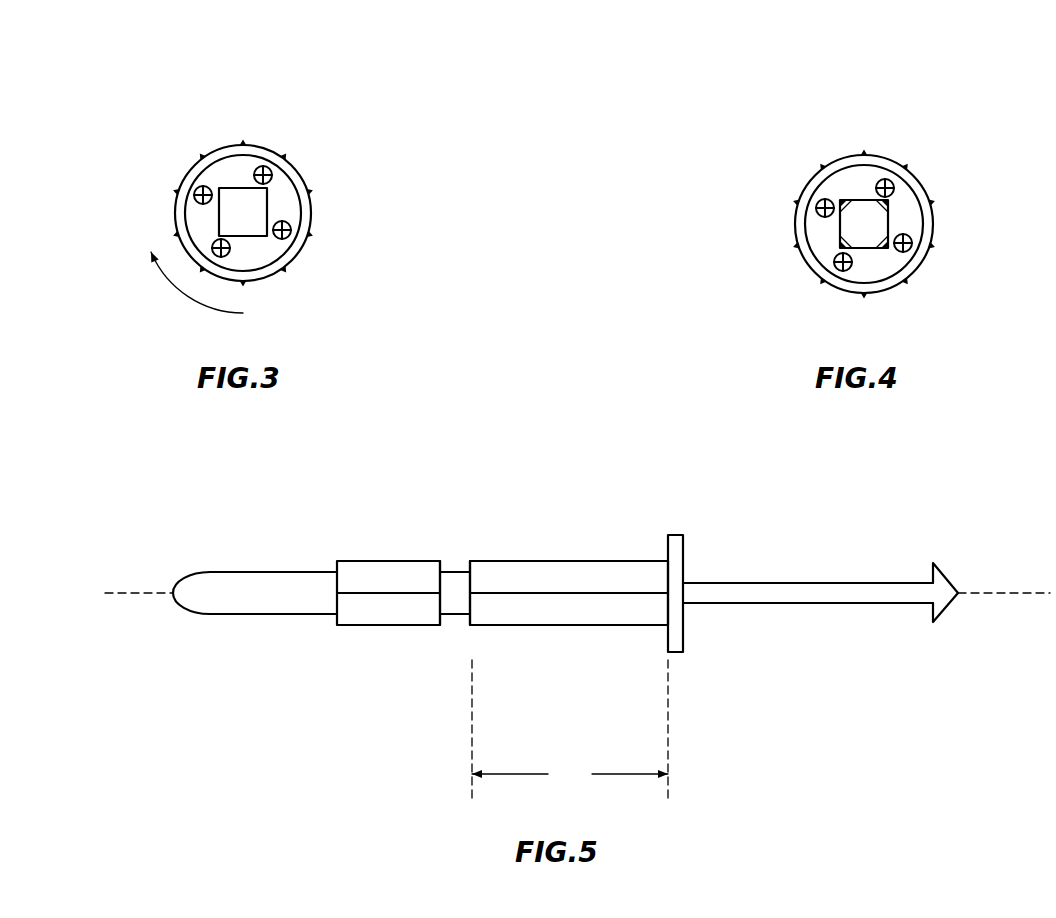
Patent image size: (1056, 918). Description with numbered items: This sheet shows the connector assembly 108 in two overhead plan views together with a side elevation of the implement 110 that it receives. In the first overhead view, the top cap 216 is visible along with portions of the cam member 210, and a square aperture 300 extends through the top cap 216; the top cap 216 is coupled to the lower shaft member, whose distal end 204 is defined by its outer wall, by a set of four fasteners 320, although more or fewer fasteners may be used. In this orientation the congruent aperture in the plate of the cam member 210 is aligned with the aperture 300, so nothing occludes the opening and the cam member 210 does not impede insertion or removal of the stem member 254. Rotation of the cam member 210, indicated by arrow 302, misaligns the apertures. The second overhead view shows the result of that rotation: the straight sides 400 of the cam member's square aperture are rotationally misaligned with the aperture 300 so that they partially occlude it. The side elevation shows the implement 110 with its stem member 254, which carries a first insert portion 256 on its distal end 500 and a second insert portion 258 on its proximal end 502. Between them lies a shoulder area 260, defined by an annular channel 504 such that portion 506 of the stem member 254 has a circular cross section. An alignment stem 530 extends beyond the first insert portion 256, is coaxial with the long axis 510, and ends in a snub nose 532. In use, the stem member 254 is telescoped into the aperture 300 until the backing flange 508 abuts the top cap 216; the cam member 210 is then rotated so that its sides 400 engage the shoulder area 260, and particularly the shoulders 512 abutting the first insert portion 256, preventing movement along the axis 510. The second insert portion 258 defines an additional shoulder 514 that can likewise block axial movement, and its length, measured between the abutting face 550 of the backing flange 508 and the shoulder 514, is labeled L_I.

In FIG. 3, the connector assembly 108 is at (340, 165).
In FIG. 5, the implement 110 is at (672, 483).
In FIG. 4, the distal end 204 is at (815, 177).
In FIG. 3, the cam member 210 is at (177, 192).
In FIG. 3, the top cap 216 is at (230, 172).
In FIG. 4, the top cap 216 is at (903, 200).
In FIG. 5, the stem member 254 is at (445, 518).
In FIG. 5, the first insert portion 256 is at (357, 577).
In FIG. 5, the second insert portion 258 is at (567, 578).
In FIG. 5, the shoulder area 260 is at (452, 665).
In FIG. 3, the aperture 300 is at (258, 208).
In FIG. 4, the aperture 300 is at (862, 203).
In FIG. 3, the arrow 302 is at (183, 295).
In FIG. 3, the fasteners 320 is at (200, 196).
In FIG. 4, the sides 400 is at (837, 198).
In FIG. 5, the distal end 500 is at (215, 555).
In FIG. 5, the proximal end 502 is at (652, 650).
In FIG. 5, the annular channel 504 is at (455, 548).
In FIG. 5, the portion 506 is at (450, 609).
In FIG. 5, the backing flange 508 is at (678, 547).
In FIG. 5, the axis 510 is at (118, 592).
In FIG. 5, the shoulders 512 is at (445, 567).
In FIG. 5, the shoulder 514 is at (463, 567).
In FIG. 5, the alignment stem 530 is at (220, 608).
In FIG. 5, the snub nose 532 is at (172, 608).
In FIG. 5, the abutting face 550 is at (667, 543).